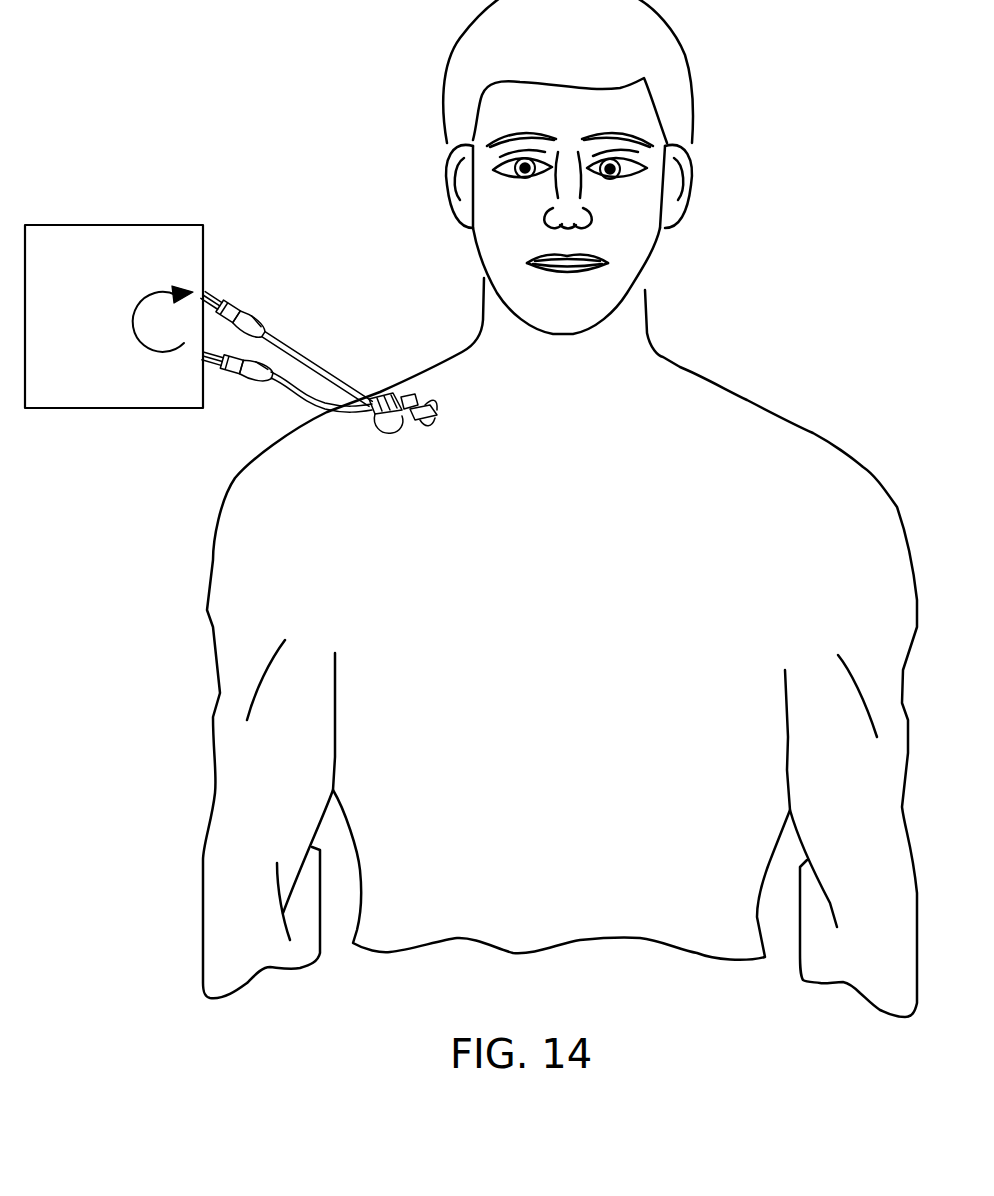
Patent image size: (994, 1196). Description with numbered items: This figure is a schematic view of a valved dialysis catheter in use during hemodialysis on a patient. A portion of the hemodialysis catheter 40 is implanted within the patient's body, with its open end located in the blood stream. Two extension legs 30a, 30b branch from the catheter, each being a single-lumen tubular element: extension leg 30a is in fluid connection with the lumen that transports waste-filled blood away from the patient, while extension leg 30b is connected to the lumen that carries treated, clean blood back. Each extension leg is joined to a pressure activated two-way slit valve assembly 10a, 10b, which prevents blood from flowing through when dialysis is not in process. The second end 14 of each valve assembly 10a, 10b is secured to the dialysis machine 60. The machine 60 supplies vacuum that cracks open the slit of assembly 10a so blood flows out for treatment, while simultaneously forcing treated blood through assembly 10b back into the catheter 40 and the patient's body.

The pressure activated two-way slit valve assembly 10a is at (250, 383).
The pressure activated two-way slit valve assembly 10b is at (262, 314).
The second end 14 is at (232, 297).
The extension leg 30a is at (278, 387).
The extension leg 30b is at (296, 351).
The hemodialysis catheter 40 is at (413, 424).
The dialysis machine 60 is at (102, 224).